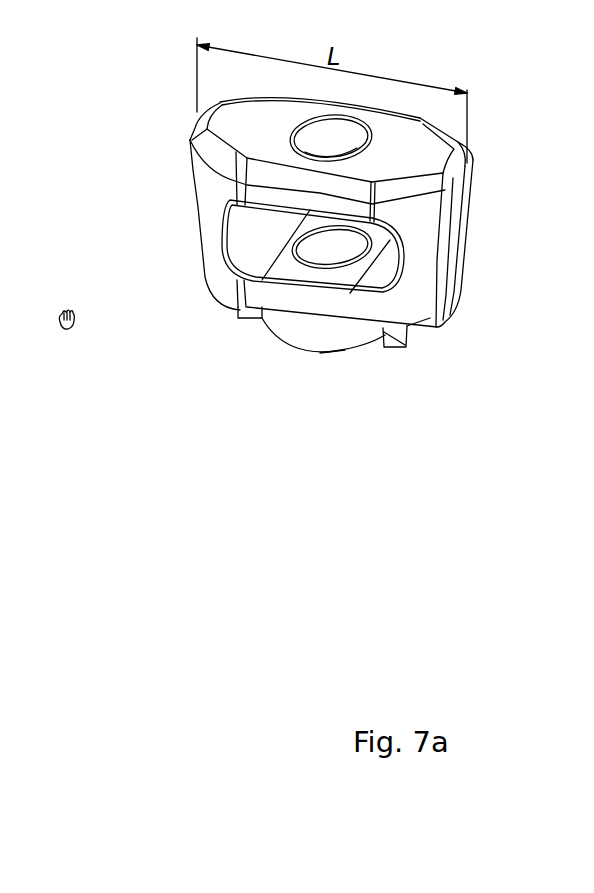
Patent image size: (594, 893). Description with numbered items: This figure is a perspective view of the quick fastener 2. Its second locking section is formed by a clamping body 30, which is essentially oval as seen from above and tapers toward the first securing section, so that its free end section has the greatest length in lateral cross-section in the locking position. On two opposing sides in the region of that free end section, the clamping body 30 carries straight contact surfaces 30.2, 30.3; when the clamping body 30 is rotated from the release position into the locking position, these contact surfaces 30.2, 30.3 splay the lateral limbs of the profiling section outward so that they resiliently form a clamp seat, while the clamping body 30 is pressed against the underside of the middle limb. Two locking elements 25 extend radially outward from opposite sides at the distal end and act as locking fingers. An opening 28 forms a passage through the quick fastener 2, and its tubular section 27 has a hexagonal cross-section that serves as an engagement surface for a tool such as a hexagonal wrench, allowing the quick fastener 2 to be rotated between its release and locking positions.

The quick fastener 2 is at (418, 305).
The locking elements 25 is at (243, 313).
The tubular section 27 is at (292, 338).
The opening 28 is at (349, 358).
The clamping body 30 is at (484, 262).
The contact surface 30.2 is at (177, 119).
The contact surface 30.3 is at (486, 183).